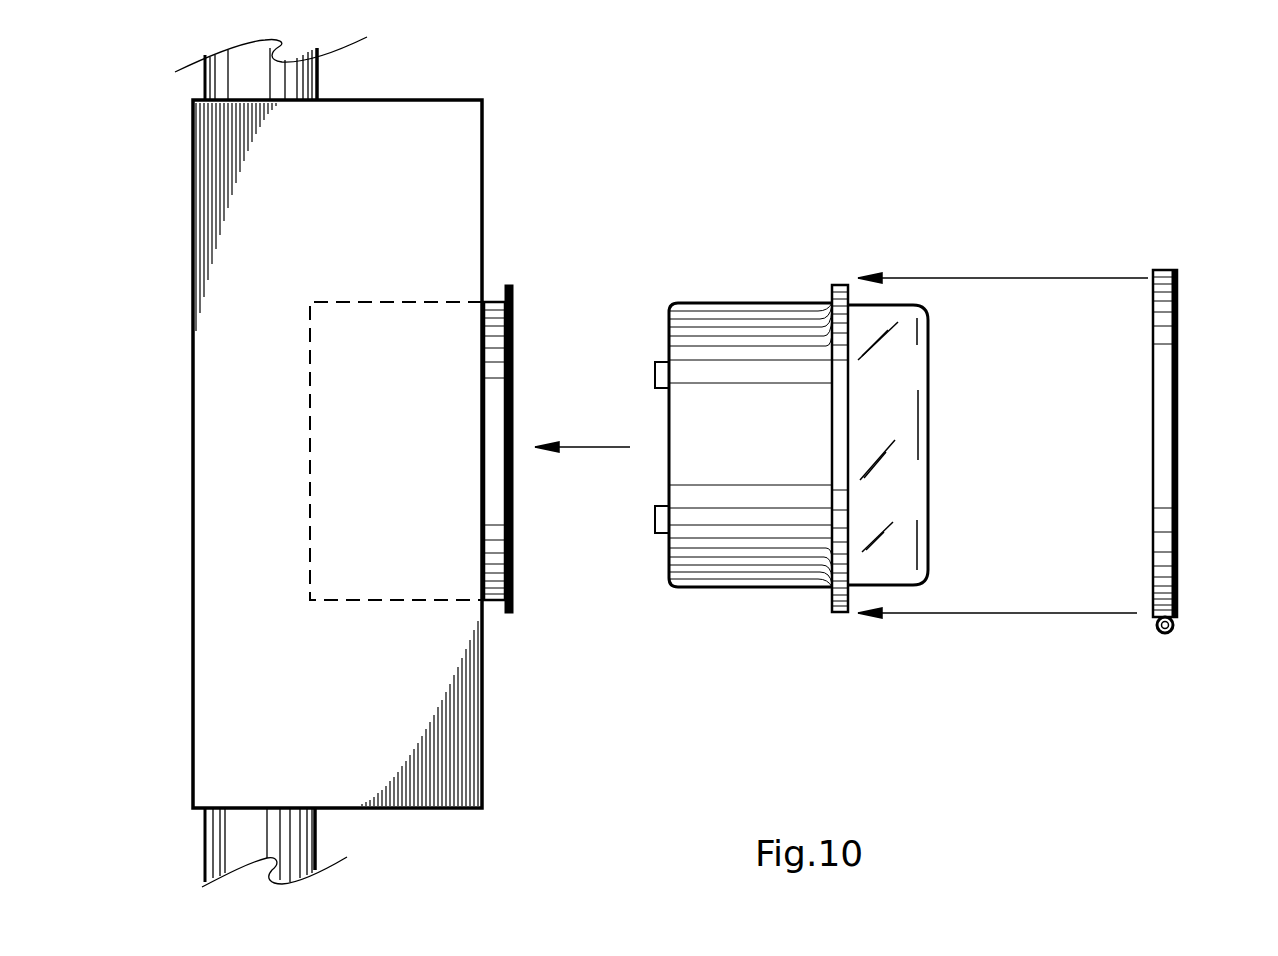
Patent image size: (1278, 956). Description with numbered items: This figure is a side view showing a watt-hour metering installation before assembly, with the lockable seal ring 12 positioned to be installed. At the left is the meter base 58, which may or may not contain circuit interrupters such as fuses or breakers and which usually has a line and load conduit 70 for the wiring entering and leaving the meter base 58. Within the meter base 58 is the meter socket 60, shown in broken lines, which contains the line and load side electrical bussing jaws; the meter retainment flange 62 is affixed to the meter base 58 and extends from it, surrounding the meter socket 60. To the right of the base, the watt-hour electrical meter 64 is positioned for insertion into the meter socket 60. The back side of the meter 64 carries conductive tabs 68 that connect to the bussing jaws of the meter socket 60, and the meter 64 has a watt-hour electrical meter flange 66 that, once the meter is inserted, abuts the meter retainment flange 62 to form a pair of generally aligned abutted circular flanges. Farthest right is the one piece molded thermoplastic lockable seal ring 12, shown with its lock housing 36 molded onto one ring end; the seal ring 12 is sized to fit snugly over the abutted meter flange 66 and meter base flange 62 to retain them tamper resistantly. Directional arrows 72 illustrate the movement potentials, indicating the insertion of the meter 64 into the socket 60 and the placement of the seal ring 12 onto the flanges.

The lockable seal ring 12 is at (1180, 331).
The lock housing 36 is at (1168, 640).
The meter base 58 is at (447, 132).
The meter socket 60 is at (375, 360).
The meter retainment flange 62 is at (512, 287).
The watt-hour electrical meter 64 is at (750, 302).
The watt-hour electrical meter flange 66 is at (838, 285).
The conductive tabs 68 is at (656, 366).
The line and load conduit 70 is at (318, 77).
The directional arrows 72 is at (1052, 277).